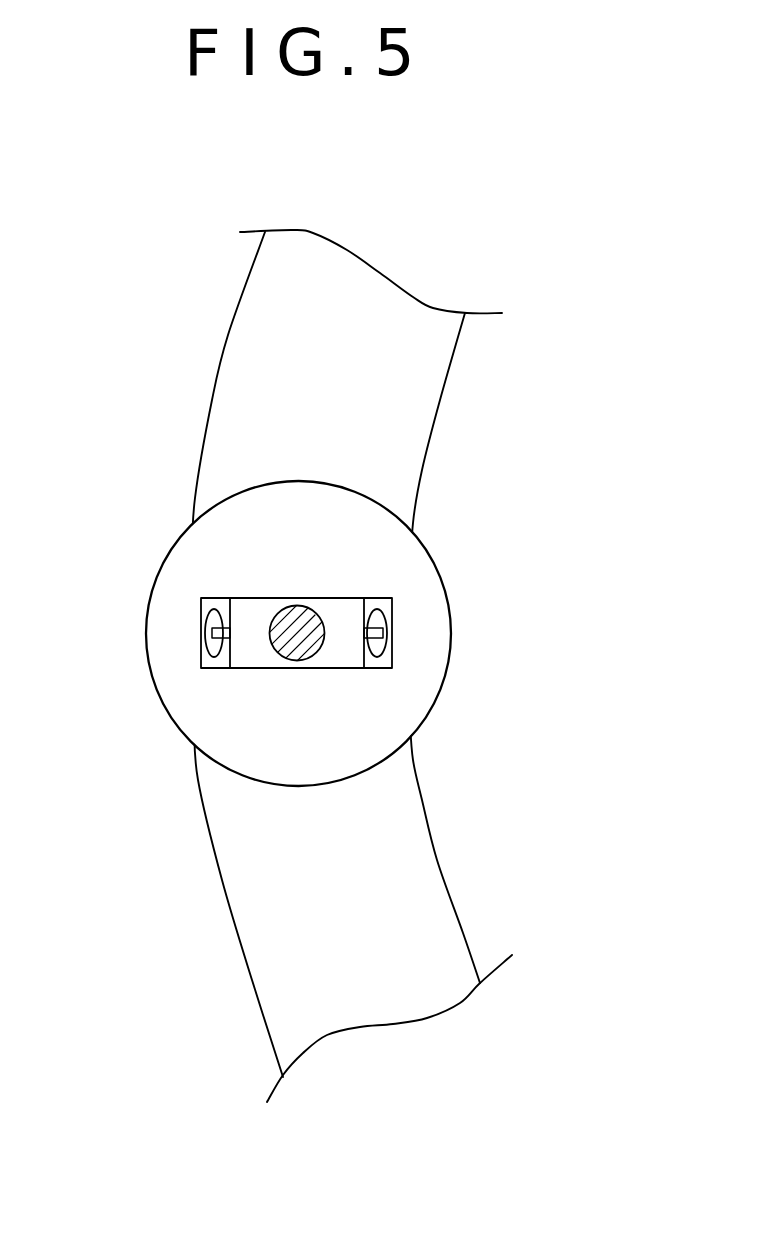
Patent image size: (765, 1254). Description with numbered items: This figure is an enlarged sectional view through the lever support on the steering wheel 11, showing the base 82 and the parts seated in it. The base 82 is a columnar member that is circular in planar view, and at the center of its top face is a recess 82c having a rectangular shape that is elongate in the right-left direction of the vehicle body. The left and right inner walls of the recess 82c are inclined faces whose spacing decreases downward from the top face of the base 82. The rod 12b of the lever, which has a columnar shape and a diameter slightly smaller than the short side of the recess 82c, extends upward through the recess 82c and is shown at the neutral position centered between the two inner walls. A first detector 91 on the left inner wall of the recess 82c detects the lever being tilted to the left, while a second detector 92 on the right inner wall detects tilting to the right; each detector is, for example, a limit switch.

The steering wheel 11 is at (229, 337).
The base 82 is at (145, 659).
The recess 82c is at (331, 605).
The first detector 91 is at (213, 611).
The second detector 92 is at (379, 608).
The rod 12b is at (287, 643).